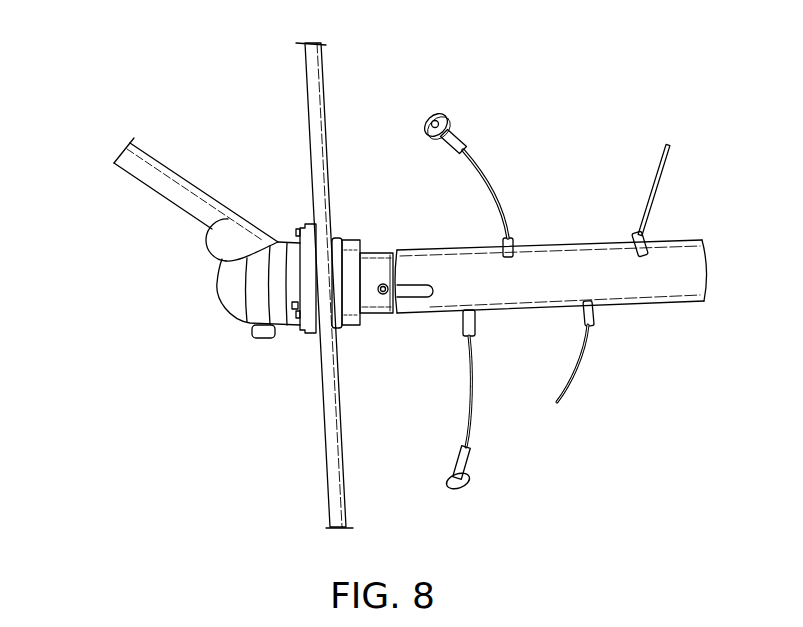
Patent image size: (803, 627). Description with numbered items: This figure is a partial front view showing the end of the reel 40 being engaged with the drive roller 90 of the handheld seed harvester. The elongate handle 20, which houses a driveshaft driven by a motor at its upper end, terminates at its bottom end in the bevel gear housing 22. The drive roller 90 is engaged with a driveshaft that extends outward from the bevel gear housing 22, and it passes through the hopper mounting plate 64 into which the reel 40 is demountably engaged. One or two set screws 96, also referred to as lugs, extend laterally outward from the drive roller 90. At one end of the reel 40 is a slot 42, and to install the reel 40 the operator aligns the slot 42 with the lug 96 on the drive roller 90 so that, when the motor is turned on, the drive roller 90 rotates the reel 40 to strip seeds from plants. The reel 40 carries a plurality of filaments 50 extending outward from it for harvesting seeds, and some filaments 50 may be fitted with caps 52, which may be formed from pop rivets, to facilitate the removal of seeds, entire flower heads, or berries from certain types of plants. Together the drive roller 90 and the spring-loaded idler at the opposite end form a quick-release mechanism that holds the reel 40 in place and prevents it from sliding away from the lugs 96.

The elongate handle 20 is at (138, 184).
The bevel gear housing 22 is at (222, 303).
The reel 40 is at (666, 304).
The slot 42 is at (425, 302).
The filament 50 is at (507, 198).
The cap 52 is at (455, 125).
The hopper mounting plate 64 is at (307, 87).
The drive roller 90 is at (379, 252).
The set screw 96 is at (383, 296).